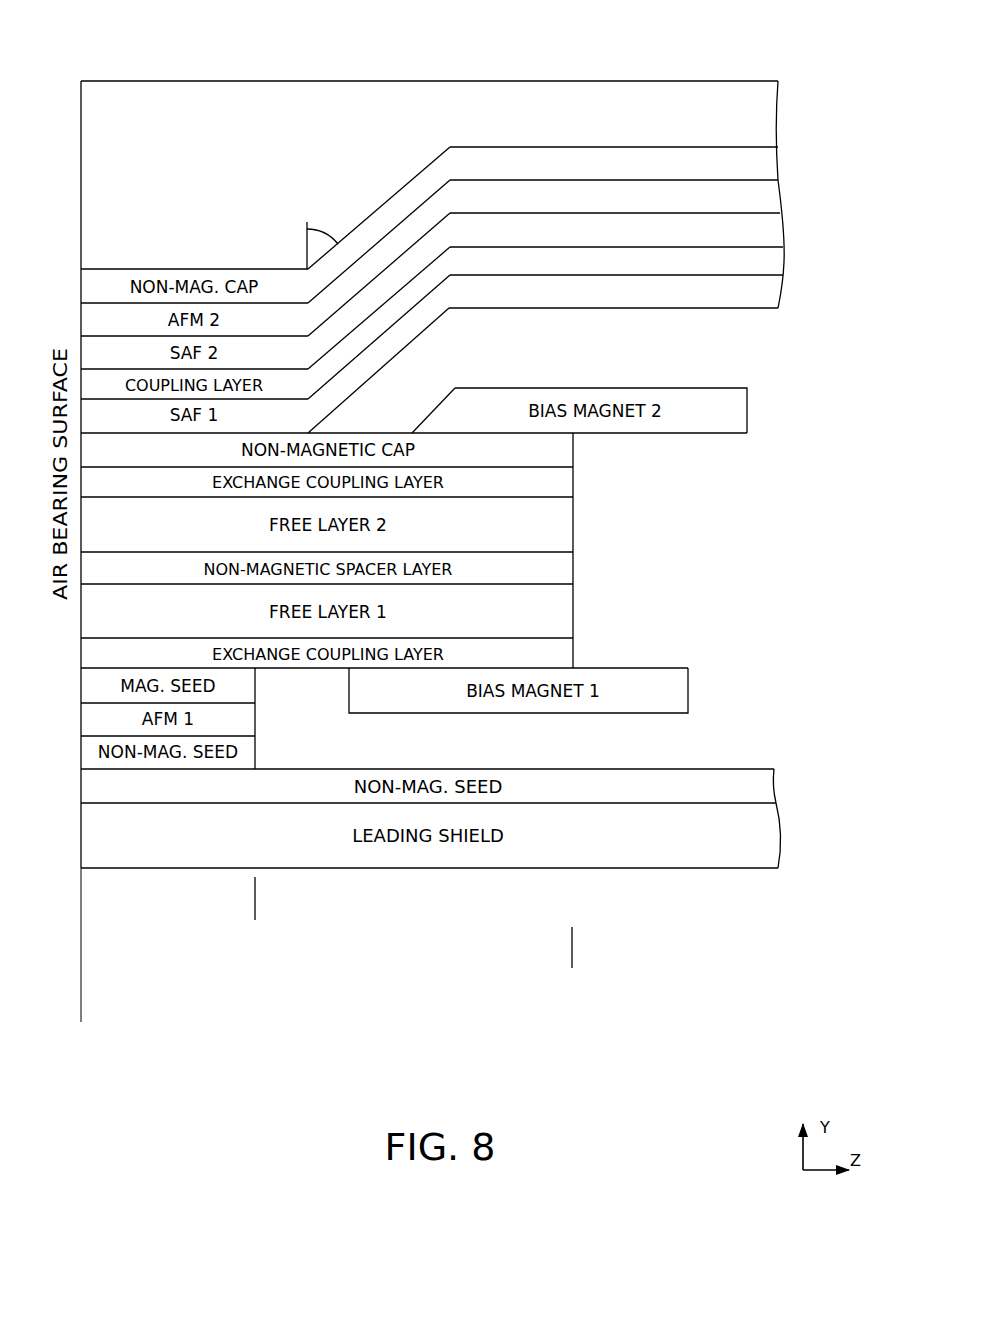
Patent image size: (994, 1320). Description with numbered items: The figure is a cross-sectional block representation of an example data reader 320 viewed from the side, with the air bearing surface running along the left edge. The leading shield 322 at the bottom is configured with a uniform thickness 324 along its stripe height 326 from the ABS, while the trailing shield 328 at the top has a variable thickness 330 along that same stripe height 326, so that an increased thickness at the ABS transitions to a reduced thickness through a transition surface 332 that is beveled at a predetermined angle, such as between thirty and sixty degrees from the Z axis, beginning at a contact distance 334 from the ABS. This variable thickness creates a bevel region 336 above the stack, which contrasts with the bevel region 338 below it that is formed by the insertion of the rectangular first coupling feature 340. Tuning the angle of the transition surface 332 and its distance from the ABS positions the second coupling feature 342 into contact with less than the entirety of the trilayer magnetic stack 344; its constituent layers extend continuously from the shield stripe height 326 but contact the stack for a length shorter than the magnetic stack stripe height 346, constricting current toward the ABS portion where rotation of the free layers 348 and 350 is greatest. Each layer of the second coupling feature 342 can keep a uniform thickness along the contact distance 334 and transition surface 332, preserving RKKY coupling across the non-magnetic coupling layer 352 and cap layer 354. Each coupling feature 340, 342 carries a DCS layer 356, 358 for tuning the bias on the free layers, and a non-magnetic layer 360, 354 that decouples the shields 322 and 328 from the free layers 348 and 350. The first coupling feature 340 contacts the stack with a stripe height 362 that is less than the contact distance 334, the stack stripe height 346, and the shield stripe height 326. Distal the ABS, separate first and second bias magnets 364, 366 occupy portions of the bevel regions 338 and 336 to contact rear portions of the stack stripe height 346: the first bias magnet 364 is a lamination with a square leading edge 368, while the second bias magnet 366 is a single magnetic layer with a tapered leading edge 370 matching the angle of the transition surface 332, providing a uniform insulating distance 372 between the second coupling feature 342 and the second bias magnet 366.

The data reader 320 is at (108, 62).
The leading shield 322 is at (756, 835).
The uniform thickness 324 is at (275, 805).
The stripe height 326 is at (83, 1002).
The trailing shield 328 is at (429, 175).
The variable thickness 330 is at (594, 83).
The transition surface 332 is at (394, 193).
The contact distance 334 is at (83, 251).
The bevel region 336 is at (507, 350).
The bevel region 338 is at (470, 752).
The first coupling feature 340 is at (74, 717).
The second coupling feature 342 is at (790, 233).
The trilayer magnetic stack 344 is at (577, 567).
The magnetic stack stripe height 346 is at (570, 948).
The first free layer 348 is at (327, 603).
The second free layer 350 is at (327, 524).
The non-magnetic coupling layer 352 is at (545, 326).
The cap layer 354 is at (543, 229).
The DCS layer 356 is at (257, 720).
The DCS layer 358 is at (544, 262).
The non-magnetic layer 360 is at (428, 786).
The stripe height 362 is at (253, 897).
The first bias magnet 364 is at (518, 690).
The second bias magnet 366 is at (601, 410).
The square leading edge 368 is at (354, 718).
The tapered leading edge 370 is at (428, 414).
The uniform insulating distance 372 is at (411, 350).